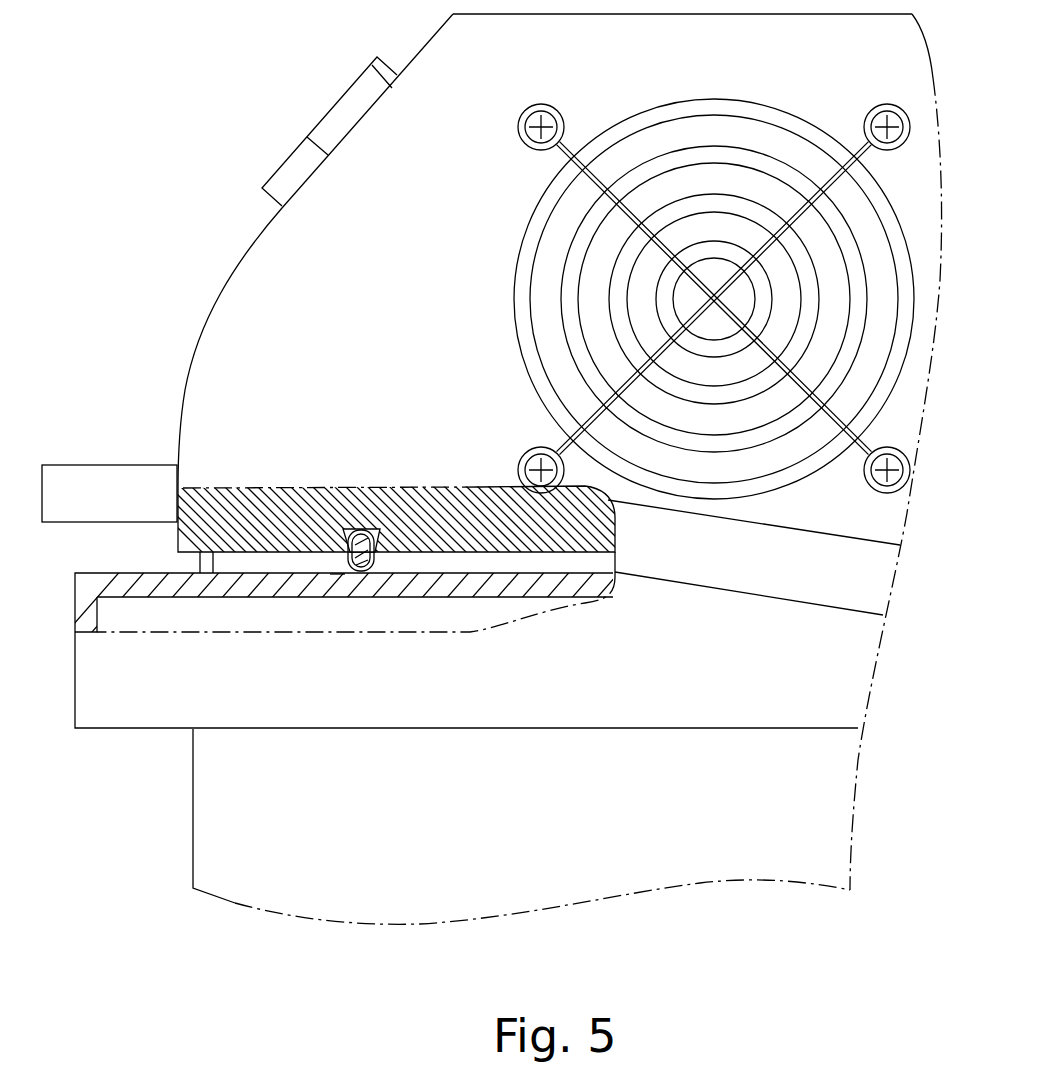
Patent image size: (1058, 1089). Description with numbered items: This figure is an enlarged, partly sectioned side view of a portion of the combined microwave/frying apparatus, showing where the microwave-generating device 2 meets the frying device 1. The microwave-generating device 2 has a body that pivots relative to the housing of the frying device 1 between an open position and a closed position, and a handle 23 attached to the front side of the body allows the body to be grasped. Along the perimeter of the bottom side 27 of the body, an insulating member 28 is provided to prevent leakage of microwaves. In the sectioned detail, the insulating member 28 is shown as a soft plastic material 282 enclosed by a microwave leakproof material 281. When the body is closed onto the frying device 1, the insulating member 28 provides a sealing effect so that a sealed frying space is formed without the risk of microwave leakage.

The frying device 1 is at (97, 610).
The microwave-generating device 2 is at (220, 288).
The handle 23 is at (90, 465).
The bottom side 27 is at (195, 553).
The insulating member 28 is at (345, 576).
The microwave leakproof material 281 is at (345, 528).
The soft plastic material 282 is at (378, 535).